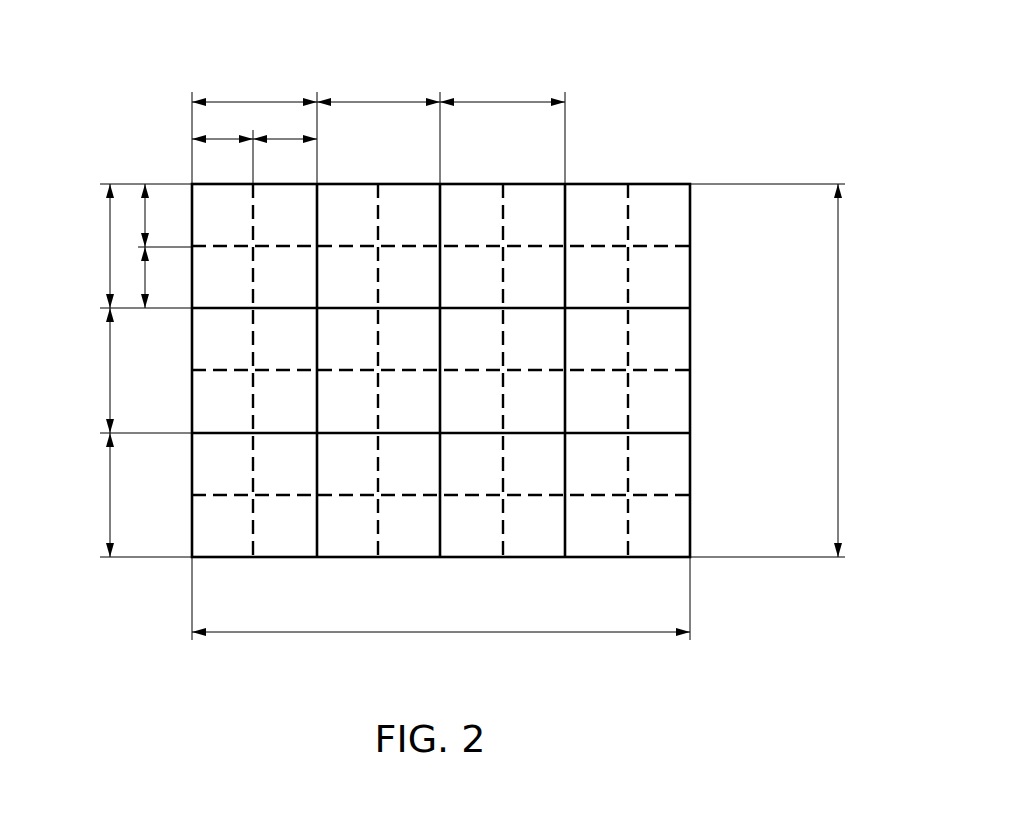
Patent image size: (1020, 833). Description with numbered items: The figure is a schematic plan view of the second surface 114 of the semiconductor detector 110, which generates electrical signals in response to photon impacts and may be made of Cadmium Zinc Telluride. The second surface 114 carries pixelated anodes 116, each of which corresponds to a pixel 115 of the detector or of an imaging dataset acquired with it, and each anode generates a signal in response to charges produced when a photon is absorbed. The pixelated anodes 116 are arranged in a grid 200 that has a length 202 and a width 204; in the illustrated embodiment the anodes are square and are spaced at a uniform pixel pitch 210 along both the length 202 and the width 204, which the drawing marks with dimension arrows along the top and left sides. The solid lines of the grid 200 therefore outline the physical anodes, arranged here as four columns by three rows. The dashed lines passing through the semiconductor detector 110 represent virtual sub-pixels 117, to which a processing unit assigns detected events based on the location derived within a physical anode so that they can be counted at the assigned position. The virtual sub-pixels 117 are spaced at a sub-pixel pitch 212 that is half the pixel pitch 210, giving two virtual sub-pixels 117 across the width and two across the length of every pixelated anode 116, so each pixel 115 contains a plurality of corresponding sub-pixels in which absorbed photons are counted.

The grid 200 is at (716, 50).
The semiconductor detector 110 is at (606, 184).
The second surface 114 is at (655, 207).
The pixelated anodes 116 is at (506, 370).
The pixel 115 is at (680, 287).
The virtual sub-pixels 117 is at (680, 456).
The pixel pitch 210 is at (257, 100).
The sub-pixel pitch 212 is at (222, 139).
The length 202 is at (840, 372).
The width 204 is at (428, 634).